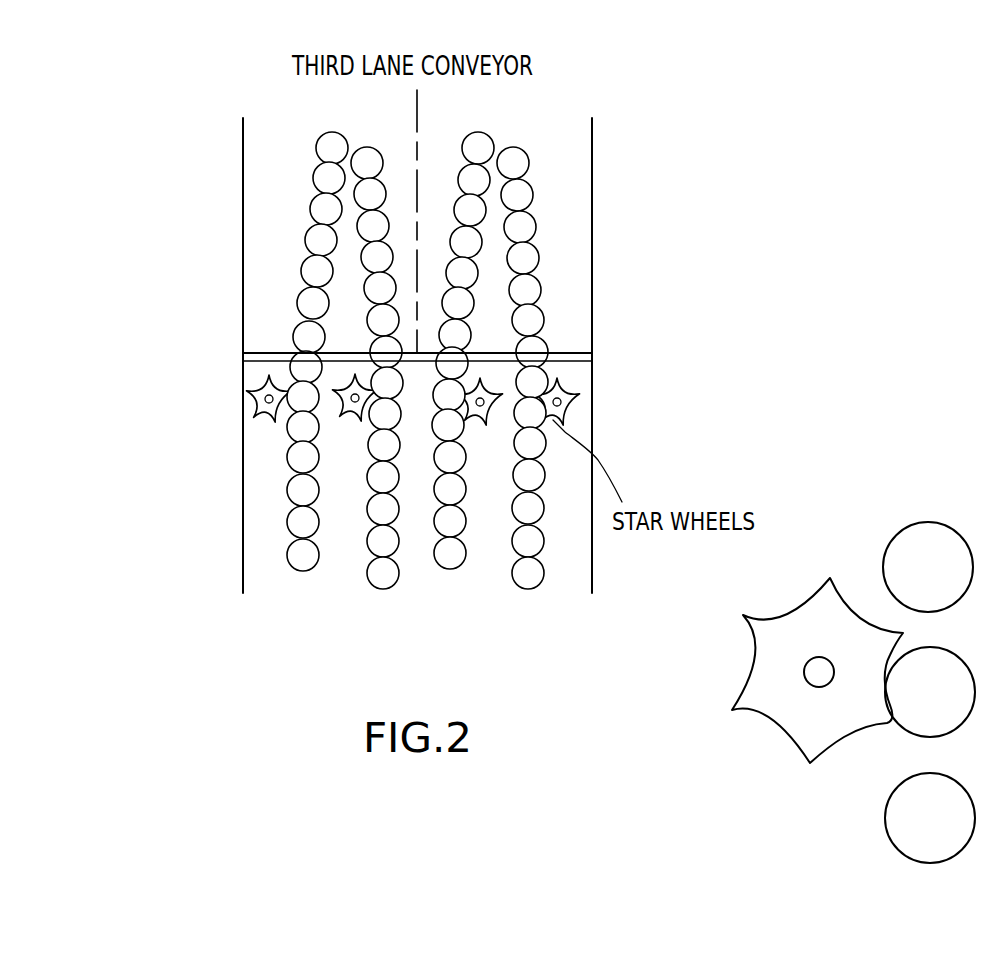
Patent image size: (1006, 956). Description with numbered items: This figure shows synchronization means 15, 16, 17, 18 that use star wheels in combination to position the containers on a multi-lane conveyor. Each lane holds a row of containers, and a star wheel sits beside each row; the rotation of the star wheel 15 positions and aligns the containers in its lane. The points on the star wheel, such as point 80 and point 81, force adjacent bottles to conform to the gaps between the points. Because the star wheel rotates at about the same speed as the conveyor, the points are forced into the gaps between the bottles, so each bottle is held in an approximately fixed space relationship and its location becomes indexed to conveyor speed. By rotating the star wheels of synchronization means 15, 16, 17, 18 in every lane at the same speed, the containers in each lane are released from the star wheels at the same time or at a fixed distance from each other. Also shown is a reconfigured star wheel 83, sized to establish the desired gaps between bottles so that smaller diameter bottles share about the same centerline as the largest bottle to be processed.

The star wheel 15 is at (262, 413).
The synchronization means 16 is at (352, 415).
The synchronization means 17 is at (490, 413).
The synchronization means 18 is at (577, 420).
The point 80 is at (586, 383).
The point 81 is at (572, 366).
The reconfigured star wheel 83 is at (763, 733).